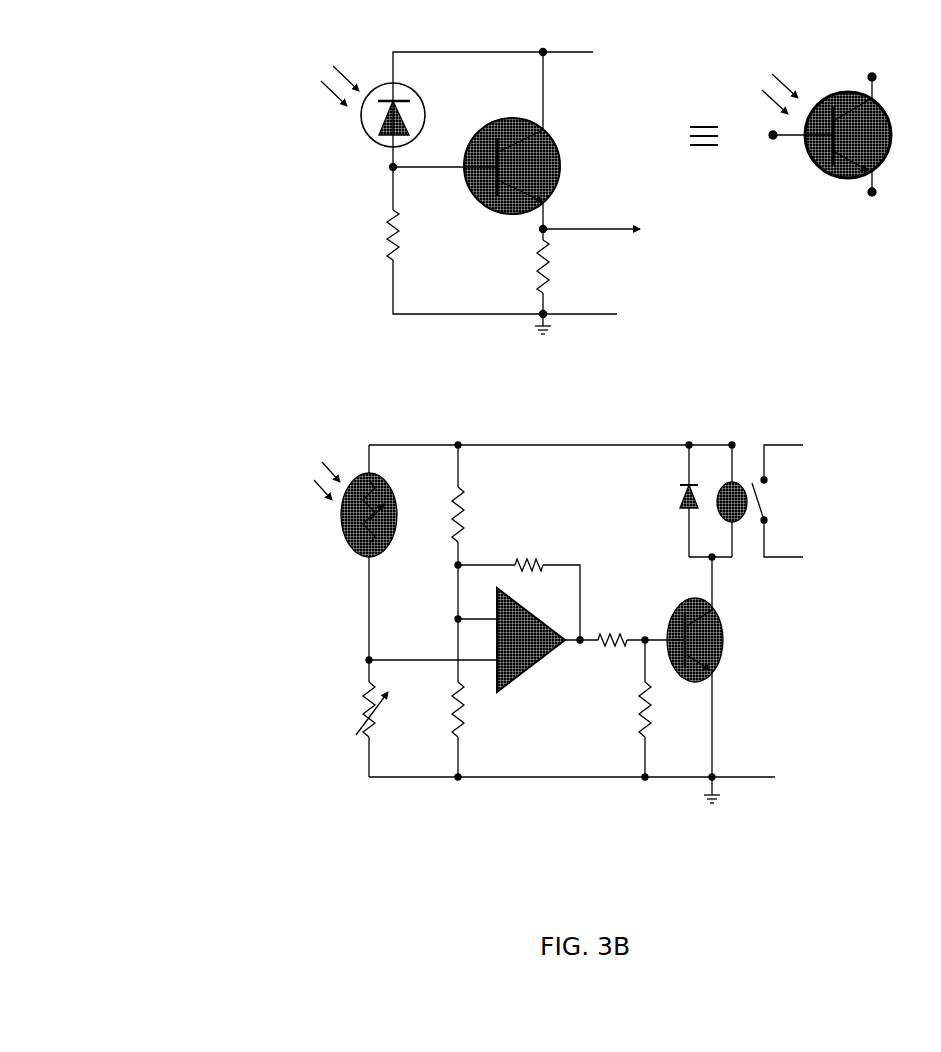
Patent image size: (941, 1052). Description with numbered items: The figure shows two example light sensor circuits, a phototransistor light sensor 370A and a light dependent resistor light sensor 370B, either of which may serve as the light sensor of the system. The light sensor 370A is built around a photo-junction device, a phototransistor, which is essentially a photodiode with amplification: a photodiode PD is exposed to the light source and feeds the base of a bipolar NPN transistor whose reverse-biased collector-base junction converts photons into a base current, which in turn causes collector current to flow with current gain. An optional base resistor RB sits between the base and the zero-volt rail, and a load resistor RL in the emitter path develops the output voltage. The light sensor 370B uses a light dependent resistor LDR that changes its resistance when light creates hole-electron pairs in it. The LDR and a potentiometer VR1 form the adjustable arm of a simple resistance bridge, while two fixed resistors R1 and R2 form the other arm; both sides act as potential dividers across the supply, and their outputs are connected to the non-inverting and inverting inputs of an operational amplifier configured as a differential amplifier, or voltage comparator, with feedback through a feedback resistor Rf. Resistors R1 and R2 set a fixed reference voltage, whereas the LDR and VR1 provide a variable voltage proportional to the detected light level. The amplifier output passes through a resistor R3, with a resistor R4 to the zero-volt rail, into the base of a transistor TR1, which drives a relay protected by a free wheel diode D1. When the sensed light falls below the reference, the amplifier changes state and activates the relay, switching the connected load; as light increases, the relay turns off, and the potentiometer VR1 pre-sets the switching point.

The light sensor 370A is at (218, 120).
The light sensor 370B is at (248, 570).
The photodiode PD is at (373, 111).
The optional base resistor RB is at (441, 241).
The load resistor RL is at (560, 266).
The light dependent resistor LDR is at (355, 523).
The potentiometer VR1 is at (379, 709).
The fixed resistor R1 is at (467, 514).
The fixed resistor R2 is at (467, 709).
The feedback resistor Rf is at (529, 554).
The resistor R3 is at (612, 631).
The resistor R4 is at (655, 709).
The transistor TR1 is at (705, 630).
The free wheel diode D1 is at (683, 501).